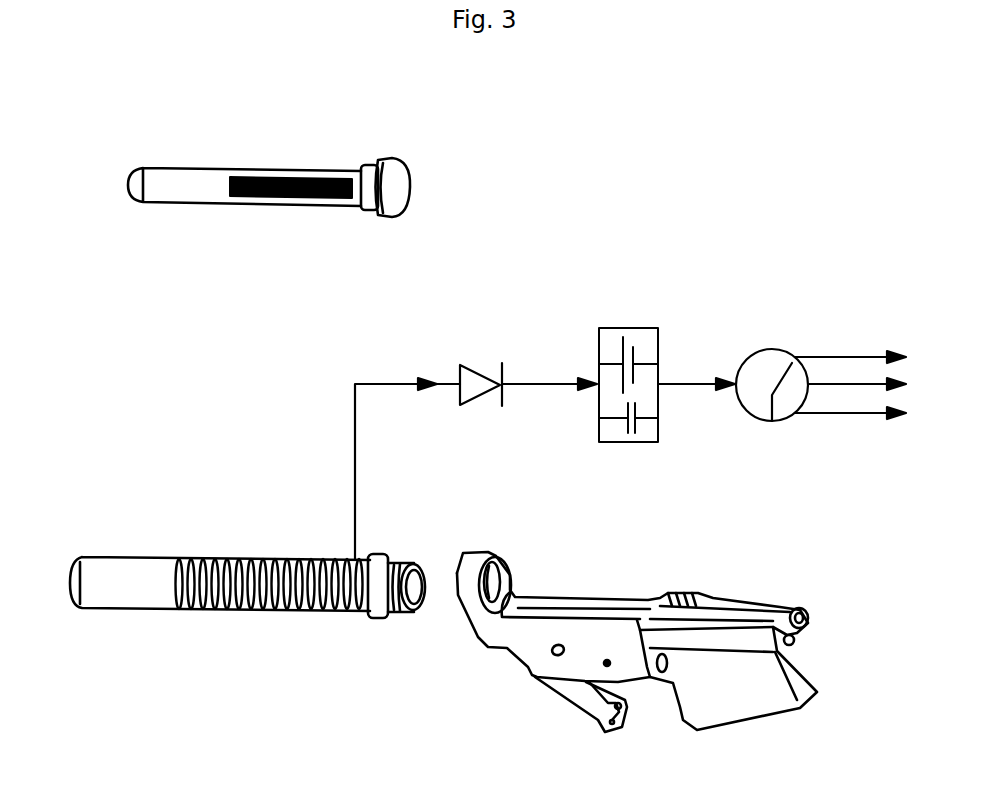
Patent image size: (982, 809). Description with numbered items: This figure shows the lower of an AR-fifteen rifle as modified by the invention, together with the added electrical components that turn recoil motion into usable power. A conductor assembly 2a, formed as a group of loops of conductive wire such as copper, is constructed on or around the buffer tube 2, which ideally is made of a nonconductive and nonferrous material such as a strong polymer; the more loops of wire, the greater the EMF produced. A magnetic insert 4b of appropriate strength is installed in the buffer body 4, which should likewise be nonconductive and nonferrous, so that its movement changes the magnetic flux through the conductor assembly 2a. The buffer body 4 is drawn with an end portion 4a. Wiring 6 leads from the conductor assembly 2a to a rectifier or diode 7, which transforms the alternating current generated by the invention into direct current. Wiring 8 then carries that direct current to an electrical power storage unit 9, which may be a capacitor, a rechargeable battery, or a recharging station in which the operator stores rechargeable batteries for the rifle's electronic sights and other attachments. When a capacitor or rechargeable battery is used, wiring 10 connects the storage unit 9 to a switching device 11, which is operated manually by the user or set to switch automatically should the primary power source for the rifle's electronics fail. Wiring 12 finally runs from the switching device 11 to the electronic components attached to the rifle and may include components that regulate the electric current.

The buffer tube 2 is at (102, 615).
The conductor assembly 2a is at (268, 615).
The buffer body 4 is at (135, 167).
The cap 4a is at (410, 168).
The magnetic insert 4b is at (290, 165).
The wiring 6 is at (345, 412).
The rectifier or diode 7 is at (453, 362).
The wiring 8 is at (538, 373).
The capacitor, rechargeable battery or recharging station 9 is at (622, 312).
The wiring 10 is at (698, 373).
The switching device 11 is at (772, 345).
The wiring 12 is at (849, 347).